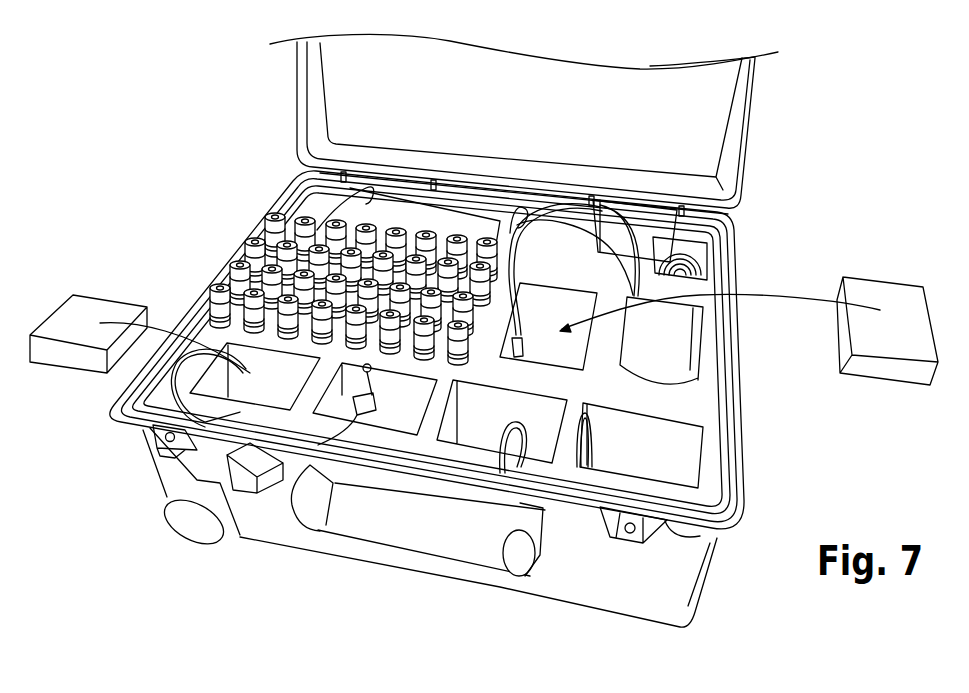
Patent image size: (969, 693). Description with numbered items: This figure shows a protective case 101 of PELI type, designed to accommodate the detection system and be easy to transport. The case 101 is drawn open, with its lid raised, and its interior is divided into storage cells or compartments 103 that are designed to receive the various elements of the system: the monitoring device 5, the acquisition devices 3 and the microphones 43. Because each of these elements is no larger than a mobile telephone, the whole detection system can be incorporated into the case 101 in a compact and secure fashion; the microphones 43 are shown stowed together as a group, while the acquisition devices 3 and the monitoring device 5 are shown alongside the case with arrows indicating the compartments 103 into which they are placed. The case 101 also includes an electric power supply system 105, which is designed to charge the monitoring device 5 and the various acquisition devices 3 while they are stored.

The protective case 101 is at (175, 562).
The storage cells or compartments 103 is at (688, 450).
The electric power supply system 105 is at (692, 330).
The microphones 43 is at (250, 372).
The acquisition devices 3 is at (85, 312).
The monitoring device 5 is at (891, 298).